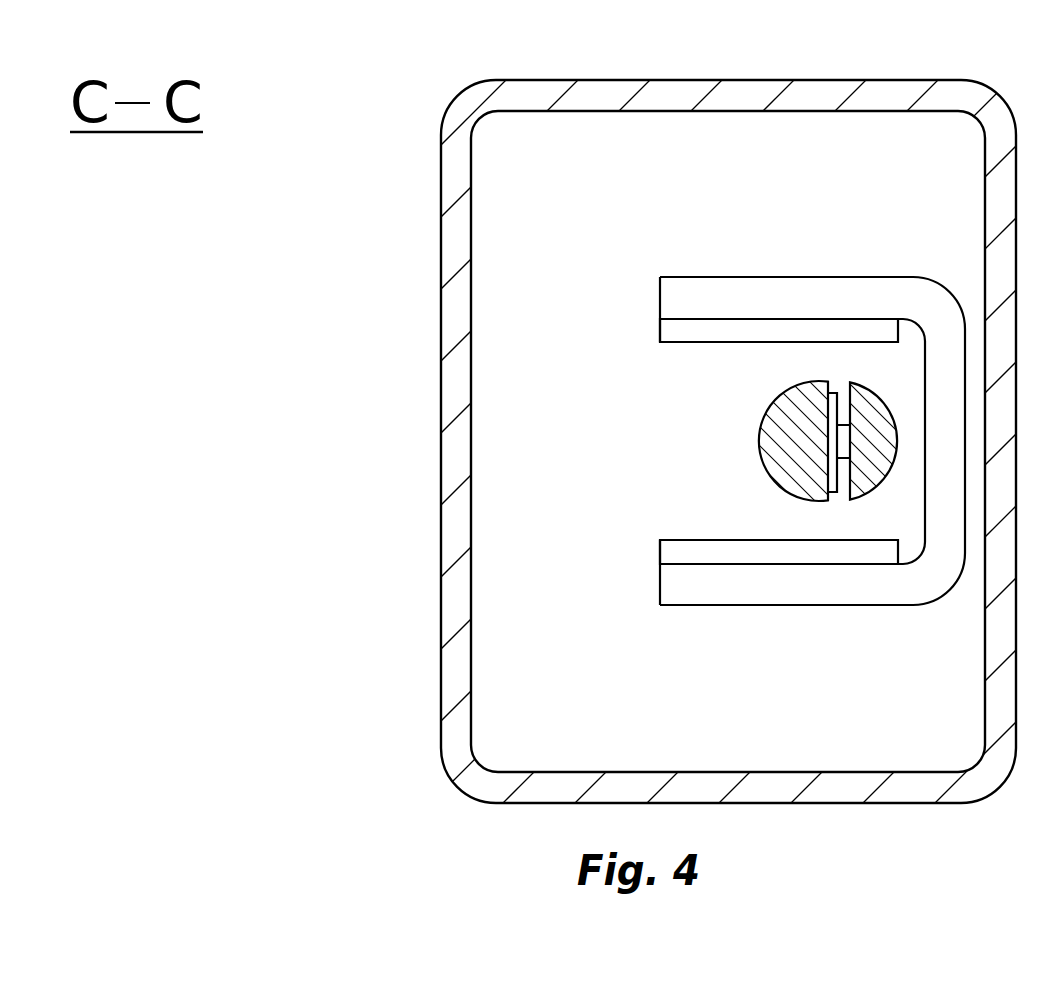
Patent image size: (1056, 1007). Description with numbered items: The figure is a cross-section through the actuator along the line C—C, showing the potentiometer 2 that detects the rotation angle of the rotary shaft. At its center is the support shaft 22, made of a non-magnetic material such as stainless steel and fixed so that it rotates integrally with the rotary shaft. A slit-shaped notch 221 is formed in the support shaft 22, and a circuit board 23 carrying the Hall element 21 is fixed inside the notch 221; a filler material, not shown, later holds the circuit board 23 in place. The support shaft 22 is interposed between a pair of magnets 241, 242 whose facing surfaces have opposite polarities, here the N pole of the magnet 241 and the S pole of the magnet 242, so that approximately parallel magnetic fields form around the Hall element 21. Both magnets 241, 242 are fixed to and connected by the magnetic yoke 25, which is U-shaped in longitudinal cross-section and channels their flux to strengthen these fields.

The potentiometer 2 is at (640, 476).
The Hall element 21 is at (843, 447).
The support shaft 22 is at (777, 434).
The circuit board 23 is at (832, 479).
The notch 221 is at (838, 507).
The magnet 241 is at (660, 330).
The magnet 242 is at (660, 550).
The magnetic yoke 25 is at (792, 277).